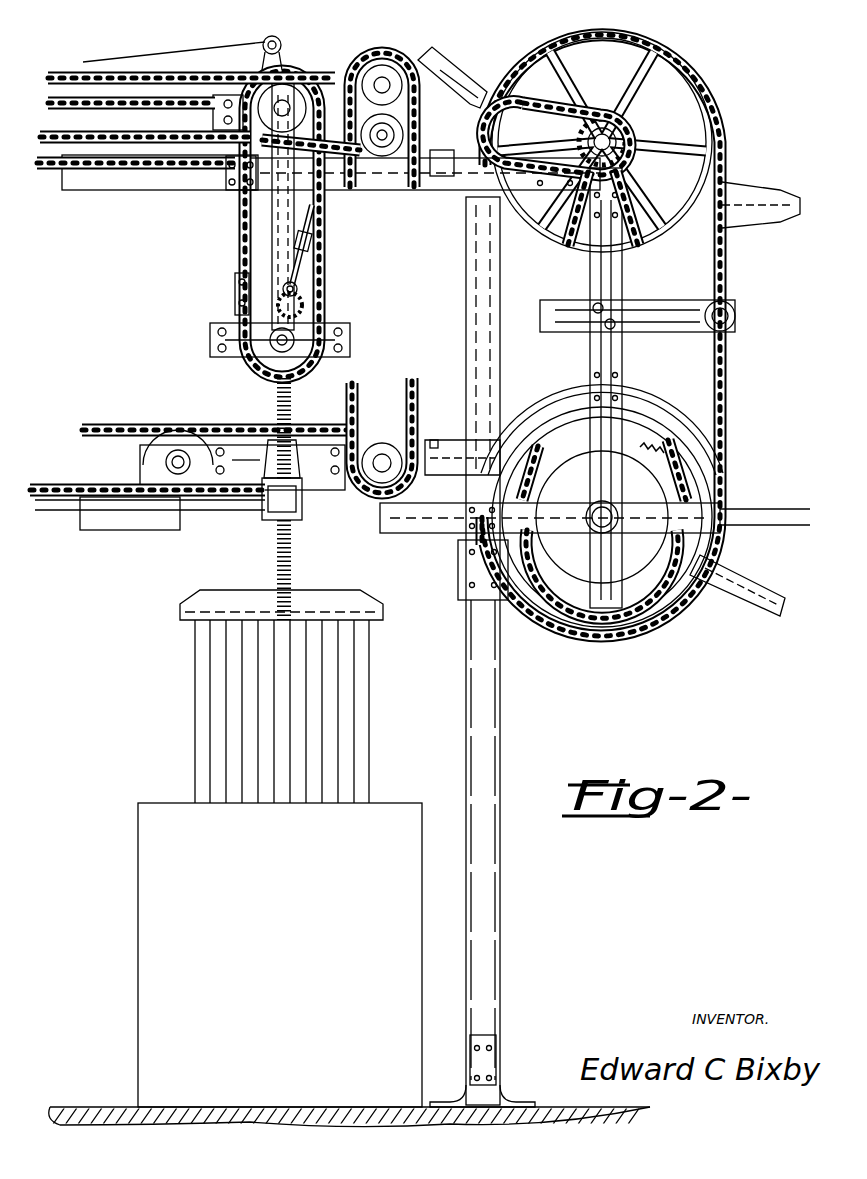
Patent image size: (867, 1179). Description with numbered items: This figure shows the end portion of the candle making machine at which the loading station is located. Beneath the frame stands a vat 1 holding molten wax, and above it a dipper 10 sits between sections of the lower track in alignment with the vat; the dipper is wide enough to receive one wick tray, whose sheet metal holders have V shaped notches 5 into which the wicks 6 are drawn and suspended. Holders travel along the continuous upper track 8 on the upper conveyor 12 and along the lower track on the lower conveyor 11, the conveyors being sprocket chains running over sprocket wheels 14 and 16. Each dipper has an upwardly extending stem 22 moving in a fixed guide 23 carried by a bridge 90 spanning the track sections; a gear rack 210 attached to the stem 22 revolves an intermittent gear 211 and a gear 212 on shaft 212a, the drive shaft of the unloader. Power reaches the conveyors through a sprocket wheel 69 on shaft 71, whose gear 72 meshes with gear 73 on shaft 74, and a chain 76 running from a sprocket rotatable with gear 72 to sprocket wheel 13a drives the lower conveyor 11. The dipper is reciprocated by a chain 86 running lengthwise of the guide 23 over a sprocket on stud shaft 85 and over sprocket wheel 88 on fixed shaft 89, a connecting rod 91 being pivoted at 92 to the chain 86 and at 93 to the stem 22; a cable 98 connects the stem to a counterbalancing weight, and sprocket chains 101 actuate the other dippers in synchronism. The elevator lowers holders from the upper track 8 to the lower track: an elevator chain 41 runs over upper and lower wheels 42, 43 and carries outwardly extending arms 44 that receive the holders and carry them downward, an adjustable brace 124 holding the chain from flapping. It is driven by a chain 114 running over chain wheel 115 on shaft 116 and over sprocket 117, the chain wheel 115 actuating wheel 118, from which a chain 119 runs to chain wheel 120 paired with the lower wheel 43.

The vat 1 is at (178, 798).
The V shaped notches 5 is at (192, 624).
The wicks 6 is at (193, 668).
The upper track 8 is at (62, 170).
The dipper 10 is at (205, 604).
The lower conveyor 11 is at (52, 485).
The upper conveyor 12 is at (90, 104).
The sprocket wheel 13a is at (384, 420).
The sprocket wheel 14 is at (346, 490).
The sprocket wheel 16 is at (358, 190).
The stem 22 is at (272, 206).
The guide 23 is at (276, 395).
The conveyor chain 41 is at (728, 272).
The upper wheel 42 is at (712, 96).
The lower wheel 43 is at (712, 470).
The arms 44 is at (462, 60).
The sprocket wheel 69 is at (430, 60).
The shaft 71 is at (384, 82).
The gear 72 is at (372, 58).
The gear 73 is at (382, 160).
The shaft 74 is at (388, 140).
The chain 76 is at (436, 158).
The stud shaft 85 is at (265, 84).
The chain 86 is at (325, 246).
The sprocket wheel 88 is at (262, 308).
The fixed shaft 89 is at (270, 345).
The bridge 90 is at (190, 438).
The connecting rod 91 is at (292, 240).
The pivot 92 is at (320, 200).
The pivot 93 is at (282, 286).
The cable 98 is at (185, 48).
The sprocket chains 101 is at (118, 135).
The chain 114 is at (560, 112).
The chain wheel 115 is at (575, 147).
The shaft 116 is at (691, 135).
The sprocket 117 is at (300, 90).
The wheel 118 is at (640, 155).
The chain 119 is at (590, 215).
The chain wheel 120 is at (645, 450).
The adjustable brace 124 is at (680, 325).
The gear rack 210 is at (290, 545).
The intermittent gear 211 is at (268, 470).
The gear 212 is at (268, 505).
The shaft 212a is at (115, 512).